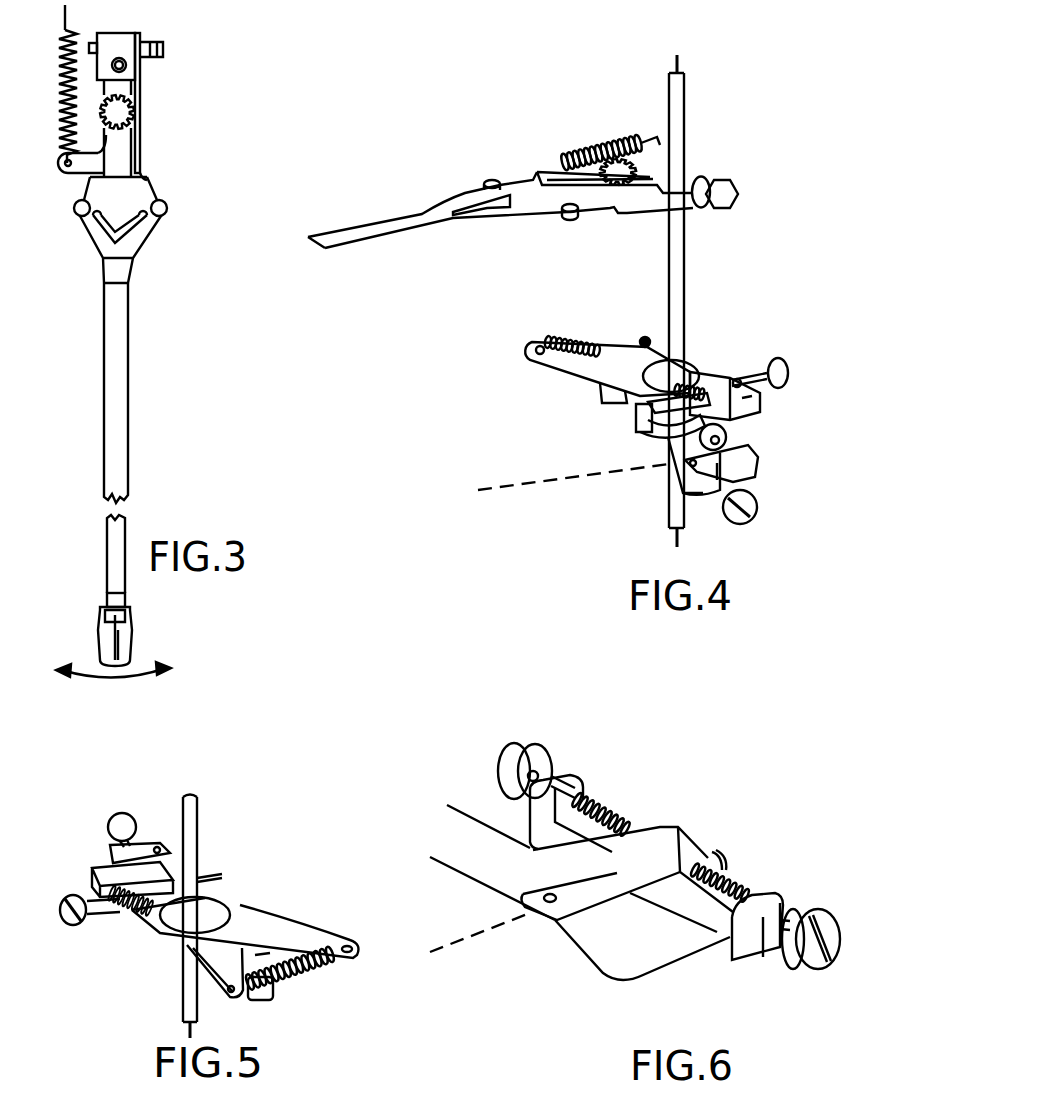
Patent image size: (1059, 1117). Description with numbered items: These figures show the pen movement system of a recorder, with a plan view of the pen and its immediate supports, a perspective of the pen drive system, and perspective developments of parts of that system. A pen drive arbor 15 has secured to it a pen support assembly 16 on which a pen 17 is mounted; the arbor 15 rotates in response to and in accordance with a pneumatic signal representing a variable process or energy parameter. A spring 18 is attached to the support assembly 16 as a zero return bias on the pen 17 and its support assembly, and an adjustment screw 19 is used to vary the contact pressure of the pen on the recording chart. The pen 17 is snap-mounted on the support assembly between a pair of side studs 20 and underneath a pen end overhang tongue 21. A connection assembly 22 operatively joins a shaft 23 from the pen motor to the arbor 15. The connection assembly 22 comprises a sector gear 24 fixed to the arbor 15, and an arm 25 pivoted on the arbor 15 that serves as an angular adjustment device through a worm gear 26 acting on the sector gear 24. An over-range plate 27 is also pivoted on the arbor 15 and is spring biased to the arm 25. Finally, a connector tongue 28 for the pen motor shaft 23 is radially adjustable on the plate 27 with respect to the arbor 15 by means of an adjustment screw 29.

In FIG. 3, the pen drive arbor 15 is at (123, 57).
In FIG. 4, the pen drive arbor 15 is at (685, 254).
In FIG. 5, the pen drive arbor 15 is at (198, 842).
In FIG. 3, the pen support assembly 16 is at (192, 94).
In FIG. 3, the pen 17 is at (128, 357).
In FIG. 3, the spring 18 is at (60, 52).
In FIG. 3, the adjustment screw 19 is at (118, 133).
In FIG. 3, the side studs 20 is at (166, 212).
In FIG. 3, the pen end overhang tongue 21 is at (128, 143).
In FIG. 4, the pen end overhang tongue 21 is at (523, 191).
In FIG. 4, the connection assembly 22 is at (800, 350).
In FIG. 4, the shaft 23 is at (545, 482).
In FIG. 6, the shaft 23 is at (440, 947).
In FIG. 4, the sector gear 24 is at (690, 363).
In FIG. 5, the sector gear 24 is at (148, 905).
In FIG. 4, the arm 25 is at (573, 367).
In FIG. 4, the worm gear 26 is at (700, 368).
In FIG. 4, the over-range plate 27 is at (660, 352).
In FIG. 5, the over-range plate 27 is at (220, 975).
In FIG. 6, the over-range plate 27 is at (660, 953).
In FIG. 4, the connector tongue 28 is at (750, 452).
In FIG. 6, the connector tongue 28 is at (521, 887).
In FIG. 4, the adjustment screw 29 is at (757, 507).
In FIG. 6, the adjustment screw 29 is at (723, 887).